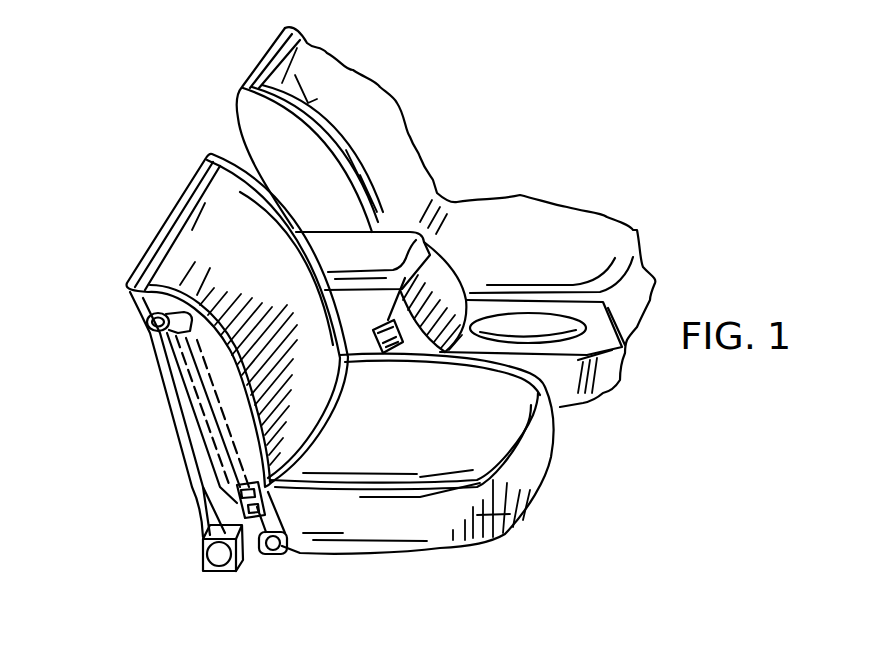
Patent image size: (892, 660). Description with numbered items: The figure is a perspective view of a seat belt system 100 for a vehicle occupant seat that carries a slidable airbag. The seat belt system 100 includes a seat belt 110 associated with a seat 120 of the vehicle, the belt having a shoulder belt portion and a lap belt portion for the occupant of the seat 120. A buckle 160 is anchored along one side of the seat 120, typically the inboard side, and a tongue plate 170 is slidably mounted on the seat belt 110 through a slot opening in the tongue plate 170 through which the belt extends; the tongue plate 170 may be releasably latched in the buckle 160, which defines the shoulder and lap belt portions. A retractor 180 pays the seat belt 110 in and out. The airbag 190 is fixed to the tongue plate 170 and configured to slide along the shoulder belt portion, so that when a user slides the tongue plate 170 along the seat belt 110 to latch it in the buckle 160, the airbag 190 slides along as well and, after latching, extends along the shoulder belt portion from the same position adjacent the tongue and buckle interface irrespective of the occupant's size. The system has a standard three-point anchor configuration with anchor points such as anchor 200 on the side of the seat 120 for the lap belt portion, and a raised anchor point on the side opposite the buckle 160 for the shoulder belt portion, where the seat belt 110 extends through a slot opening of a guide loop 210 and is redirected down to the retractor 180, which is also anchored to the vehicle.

The seat belt system 100 is at (151, 416).
The seat belt 110 is at (200, 437).
The seat 120 is at (258, 266).
The buckle 160 is at (417, 278).
The tongue plate 170 is at (267, 503).
The retractor 180 is at (217, 570).
The airbag 190 is at (243, 450).
The anchor 200 is at (280, 553).
The guide loop 210 is at (150, 333).